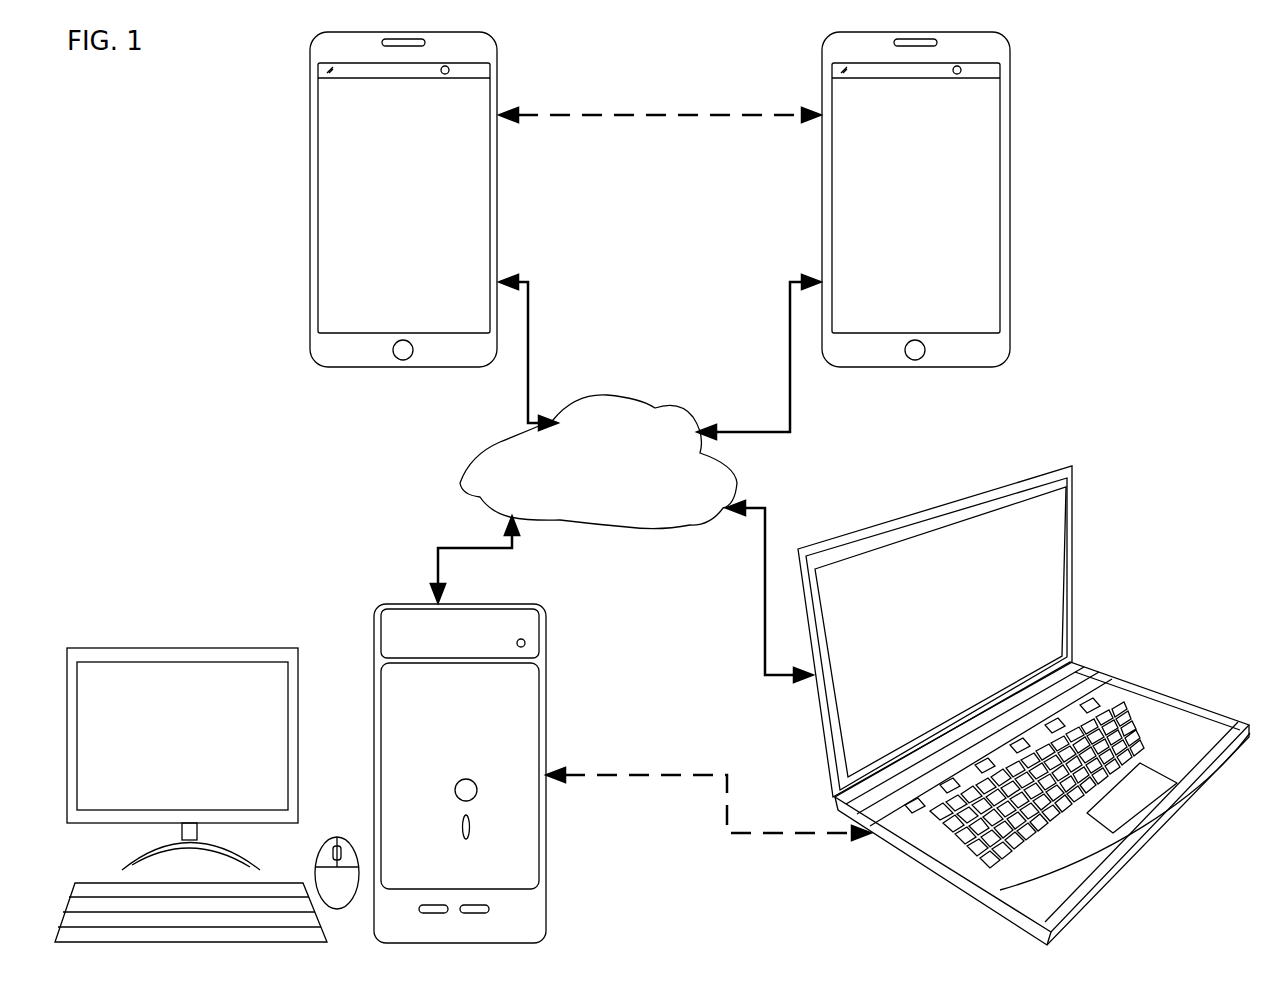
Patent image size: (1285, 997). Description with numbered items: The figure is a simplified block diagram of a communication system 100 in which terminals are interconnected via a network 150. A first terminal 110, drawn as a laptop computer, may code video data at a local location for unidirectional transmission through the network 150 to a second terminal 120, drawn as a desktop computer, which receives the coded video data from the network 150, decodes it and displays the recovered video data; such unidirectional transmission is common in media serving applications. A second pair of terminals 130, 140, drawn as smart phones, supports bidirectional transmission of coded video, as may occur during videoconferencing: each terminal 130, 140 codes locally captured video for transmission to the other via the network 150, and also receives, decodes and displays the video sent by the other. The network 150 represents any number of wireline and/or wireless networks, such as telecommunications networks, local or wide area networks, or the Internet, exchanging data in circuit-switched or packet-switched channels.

The communication system 100 is at (652, 488).
The first terminal 110 is at (1072, 548).
The second terminal 120 is at (547, 893).
The terminal 130 is at (307, 145).
The terminal 140 is at (821, 145).
The network 150 is at (598, 462).